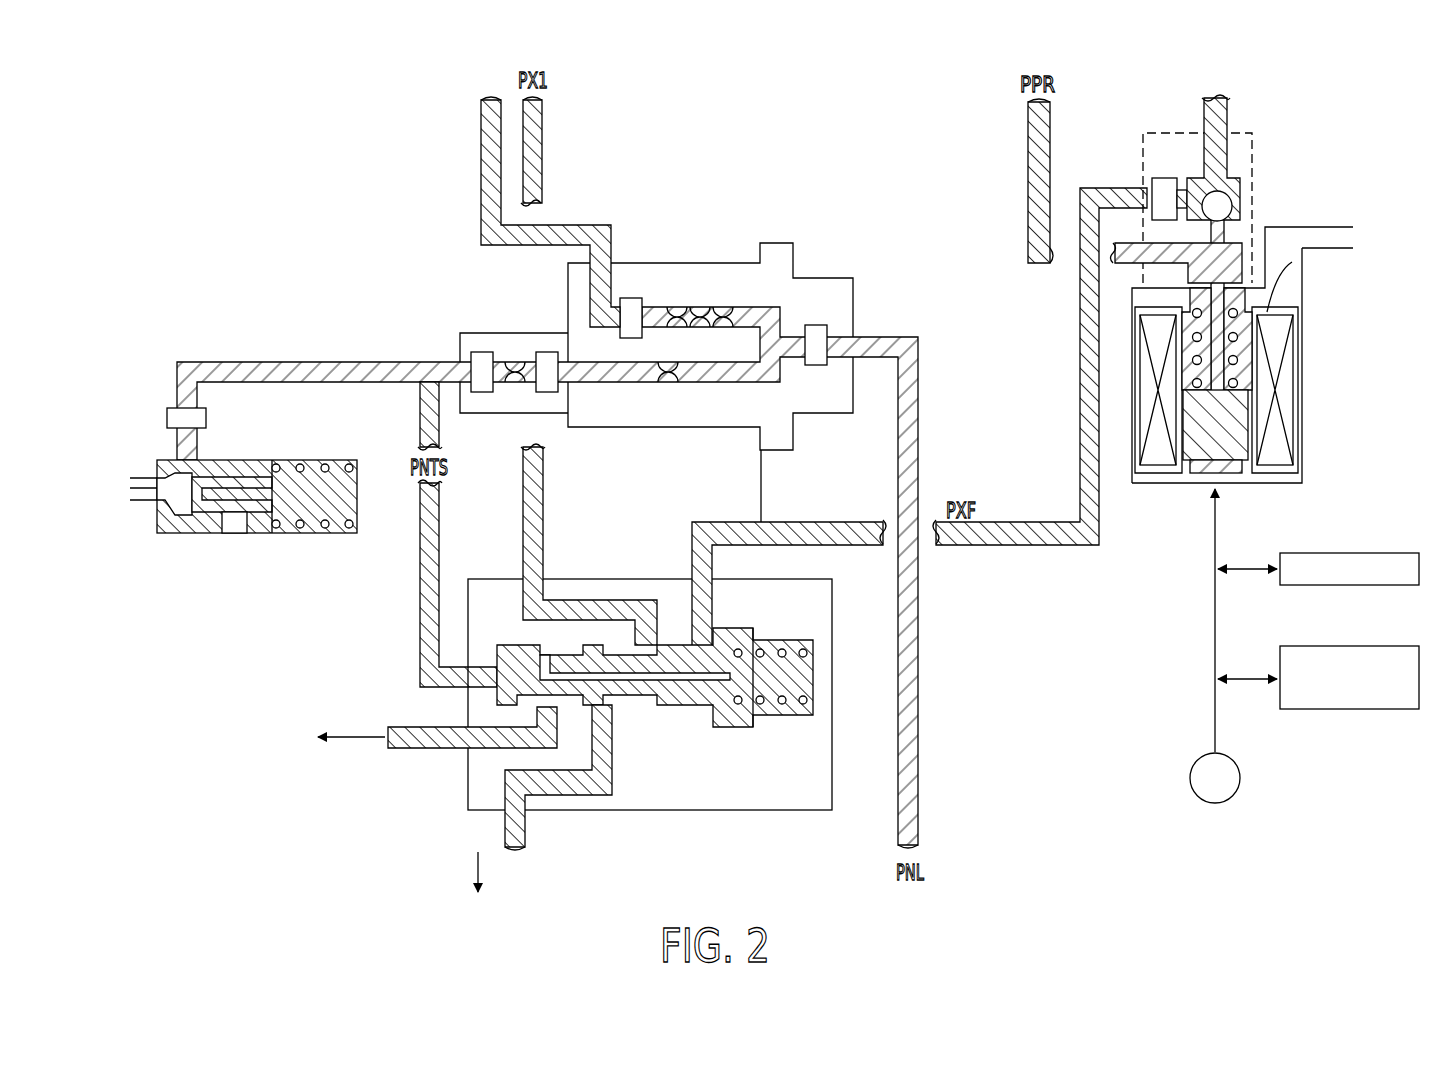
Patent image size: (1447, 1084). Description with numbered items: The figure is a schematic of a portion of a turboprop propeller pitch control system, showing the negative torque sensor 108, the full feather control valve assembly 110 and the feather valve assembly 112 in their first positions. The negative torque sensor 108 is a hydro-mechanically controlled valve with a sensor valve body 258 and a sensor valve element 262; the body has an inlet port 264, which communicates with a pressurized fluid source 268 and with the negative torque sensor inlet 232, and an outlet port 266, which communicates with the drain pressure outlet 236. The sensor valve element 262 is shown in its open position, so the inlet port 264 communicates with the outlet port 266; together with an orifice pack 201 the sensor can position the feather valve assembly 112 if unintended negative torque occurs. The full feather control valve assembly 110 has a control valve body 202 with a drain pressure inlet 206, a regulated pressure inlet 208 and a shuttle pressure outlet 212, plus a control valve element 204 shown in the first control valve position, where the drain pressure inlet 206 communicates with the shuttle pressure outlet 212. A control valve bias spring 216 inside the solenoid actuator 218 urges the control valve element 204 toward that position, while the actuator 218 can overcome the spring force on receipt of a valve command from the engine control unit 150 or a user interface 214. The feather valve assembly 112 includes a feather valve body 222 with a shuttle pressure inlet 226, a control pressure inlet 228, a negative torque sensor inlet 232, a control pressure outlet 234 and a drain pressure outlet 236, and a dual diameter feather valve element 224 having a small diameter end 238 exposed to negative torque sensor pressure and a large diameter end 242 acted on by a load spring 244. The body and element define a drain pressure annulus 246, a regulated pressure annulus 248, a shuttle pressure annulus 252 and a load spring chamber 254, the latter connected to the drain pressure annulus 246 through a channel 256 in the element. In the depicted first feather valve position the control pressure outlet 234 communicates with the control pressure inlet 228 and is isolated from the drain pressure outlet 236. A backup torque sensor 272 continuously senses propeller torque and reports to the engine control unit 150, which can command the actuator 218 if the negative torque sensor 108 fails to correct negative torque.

The negative torque sensor 108 is at (256, 515).
The full feather control valve assembly 110 is at (1225, 288).
The feather valve assembly 112 is at (591, 683).
The engine control unit 150 is at (1400, 646).
The orifice pack 201 is at (823, 278).
The control valve body 202 is at (1198, 289).
The control valve element 204 is at (1227, 208).
The drain pressure inlet 206 is at (1212, 128).
The regulated pressure inlet 208 is at (1116, 248).
The shuttle pressure outlet 212 is at (1147, 192).
The user interface 214 is at (1400, 553).
The control valve bias spring 216 is at (1237, 337).
The actuator 218 is at (1302, 385).
The feather valve body 222 is at (497, 583).
The feather valve element 224 is at (678, 705).
The shuttle pressure inlet 226 is at (700, 577).
The control pressure inlet 228 is at (537, 577).
The negative torque sensor inlet 232 is at (477, 685).
The control pressure outlet 234 is at (515, 807).
The drain pressure outlet 236 is at (477, 740).
The small diameter end 238 is at (507, 653).
The large diameter end 242 is at (718, 712).
The load spring 244 is at (808, 653).
The drain pressure annulus 246 is at (562, 650).
The regulated pressure annulus 248 is at (625, 705).
The shuttle pressure annulus 252 is at (693, 622).
The load spring chamber 254 is at (810, 675).
The channel 256 is at (712, 673).
The sensor valve body 258 is at (190, 533).
The sensor valve element 262 is at (250, 530).
The inlet port 264 is at (179, 450).
The outlet port 266 is at (145, 503).
The pressurized fluid source 268 is at (490, 98).
The backup torque sensor 272 is at (1241, 780).